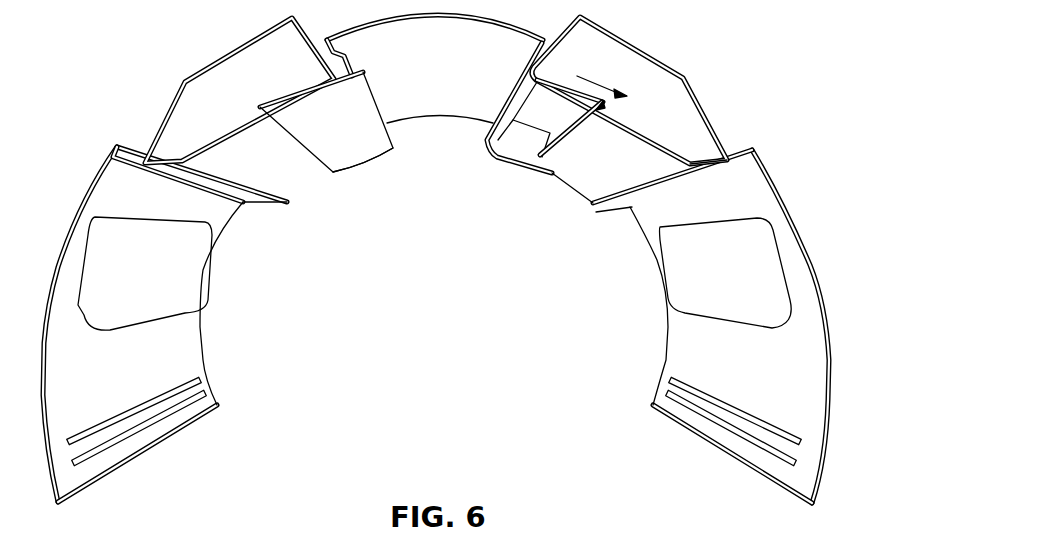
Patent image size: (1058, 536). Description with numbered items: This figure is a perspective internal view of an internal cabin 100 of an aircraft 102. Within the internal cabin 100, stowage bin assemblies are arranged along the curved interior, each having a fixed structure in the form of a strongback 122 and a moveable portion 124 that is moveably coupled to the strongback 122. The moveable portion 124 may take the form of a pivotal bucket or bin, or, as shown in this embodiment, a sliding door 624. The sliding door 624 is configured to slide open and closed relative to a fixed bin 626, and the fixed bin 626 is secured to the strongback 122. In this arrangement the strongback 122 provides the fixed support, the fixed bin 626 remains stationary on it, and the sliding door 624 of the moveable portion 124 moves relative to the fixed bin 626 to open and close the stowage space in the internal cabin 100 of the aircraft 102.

The internal cabin 100 is at (482, 259).
The aircraft 102 is at (777, 133).
The strongback 122 is at (215, 60).
The moveable portion 124 is at (347, 145).
The sliding door 624 is at (380, 152).
The fixed bin 626 is at (280, 177).